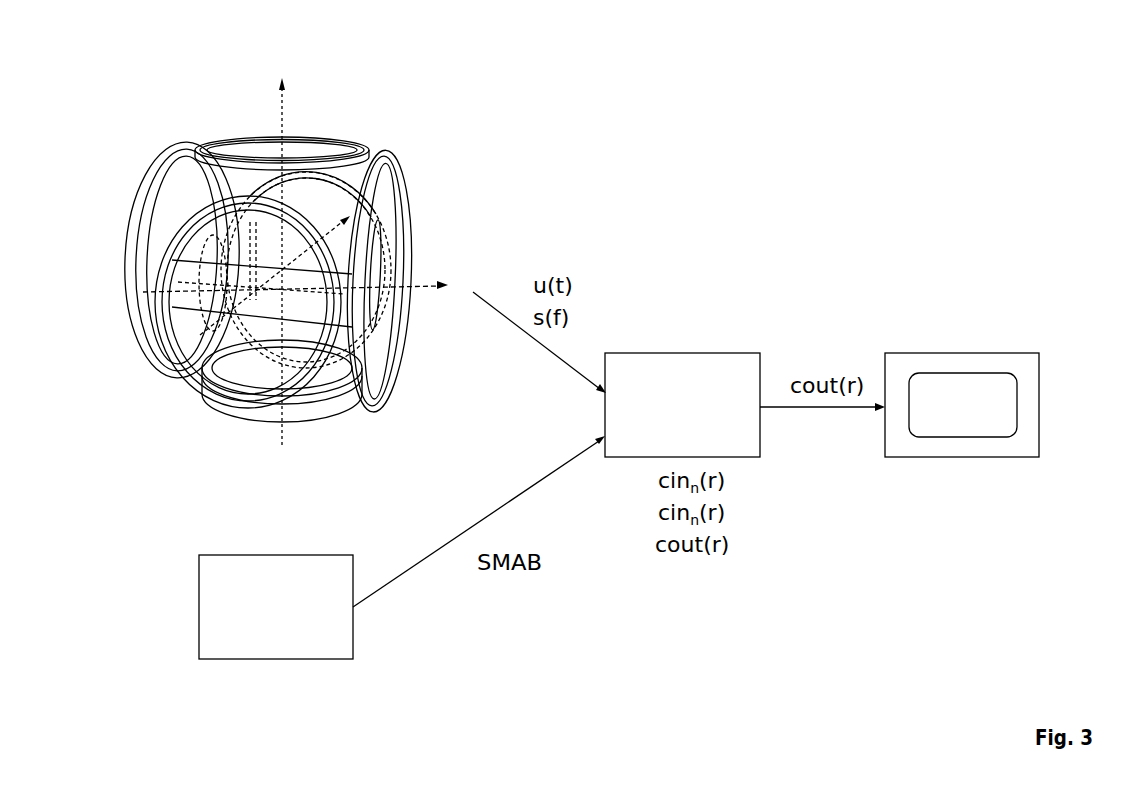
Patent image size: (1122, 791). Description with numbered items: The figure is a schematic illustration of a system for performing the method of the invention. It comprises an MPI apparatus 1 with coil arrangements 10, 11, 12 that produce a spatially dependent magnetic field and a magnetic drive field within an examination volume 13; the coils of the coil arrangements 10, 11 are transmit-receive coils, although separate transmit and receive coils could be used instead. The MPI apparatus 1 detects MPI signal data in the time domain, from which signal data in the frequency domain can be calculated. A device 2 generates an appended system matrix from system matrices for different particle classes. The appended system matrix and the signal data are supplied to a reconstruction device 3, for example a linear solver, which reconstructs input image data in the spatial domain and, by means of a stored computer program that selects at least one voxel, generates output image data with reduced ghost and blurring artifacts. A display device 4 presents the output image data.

The MPI apparatus 1 is at (412, 110).
The coil arrangement 10 is at (259, 184).
The coil arrangement 11 is at (363, 142).
The coil arrangement 12 is at (148, 346).
The examination volume 13 is at (143, 292).
The device for generating an appended system matrix 2 is at (286, 618).
The reconstruction device 3 is at (693, 415).
The display device 4 is at (971, 416).